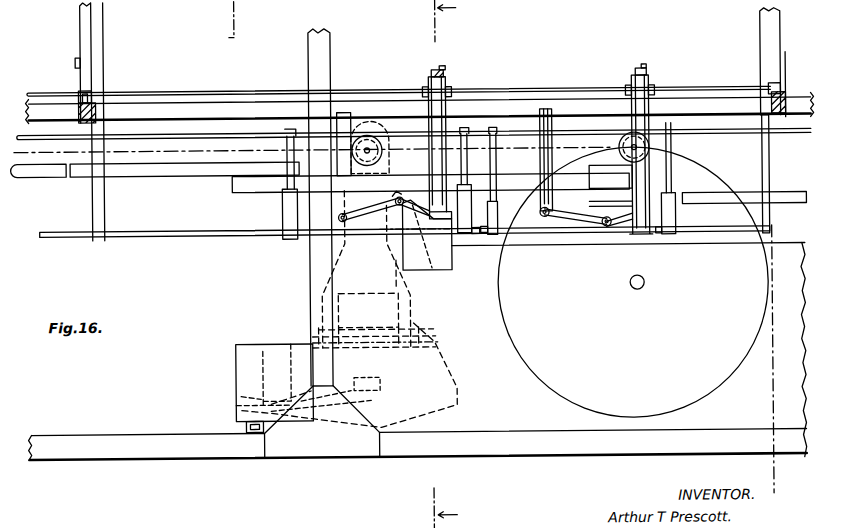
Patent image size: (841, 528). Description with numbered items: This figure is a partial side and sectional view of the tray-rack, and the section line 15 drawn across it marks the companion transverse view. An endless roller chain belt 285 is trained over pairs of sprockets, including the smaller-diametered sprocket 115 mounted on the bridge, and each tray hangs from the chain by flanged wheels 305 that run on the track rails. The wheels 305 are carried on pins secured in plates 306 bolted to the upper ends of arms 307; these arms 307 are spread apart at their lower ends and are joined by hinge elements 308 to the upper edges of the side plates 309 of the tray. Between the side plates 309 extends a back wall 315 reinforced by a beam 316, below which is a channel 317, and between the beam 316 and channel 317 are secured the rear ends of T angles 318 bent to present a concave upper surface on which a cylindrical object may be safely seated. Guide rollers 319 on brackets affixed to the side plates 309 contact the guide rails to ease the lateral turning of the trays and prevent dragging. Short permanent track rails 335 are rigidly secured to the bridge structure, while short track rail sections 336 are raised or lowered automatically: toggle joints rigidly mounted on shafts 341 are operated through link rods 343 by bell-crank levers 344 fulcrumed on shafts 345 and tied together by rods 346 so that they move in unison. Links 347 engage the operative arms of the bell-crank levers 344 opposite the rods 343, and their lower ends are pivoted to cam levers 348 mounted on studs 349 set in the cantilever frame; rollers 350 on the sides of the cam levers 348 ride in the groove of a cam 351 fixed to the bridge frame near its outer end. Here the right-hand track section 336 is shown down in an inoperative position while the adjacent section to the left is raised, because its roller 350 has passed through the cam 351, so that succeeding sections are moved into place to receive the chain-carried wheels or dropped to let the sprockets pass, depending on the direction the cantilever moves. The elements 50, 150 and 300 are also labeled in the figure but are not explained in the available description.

The section line 15 is at (457, 264).
The base 50 is at (575, 450).
The sprocket 115 is at (551, 392).
The frame post 150 is at (762, 29).
The endless roller chain belt 285 is at (234, 23).
The chute 300 is at (453, 382).
The flanged wheel 305 is at (652, 132).
The plate 306 is at (384, 128).
The arm 307 is at (362, 133).
The hinge element 308 is at (432, 321).
The side plate 309 is at (277, 362).
The back wall 315 is at (257, 373).
The beam 316 is at (230, 400).
The channel 317 is at (251, 433).
The T angle 318 is at (388, 404).
The guide roller 319 is at (381, 376).
The permanent track rail 335 is at (588, 168).
The track rail section 336 is at (149, 172).
The shaft 341 is at (113, 236).
The link rod 343 is at (450, 101).
The bell-crank lever 344 is at (435, 71).
The shaft 345 is at (181, 90).
The rod 346 is at (447, 72).
The link 347 is at (444, 108).
The cam lever 348 is at (343, 229).
The stud 349 is at (290, 211).
The roller 350 is at (398, 208).
The cam 351 is at (432, 262).